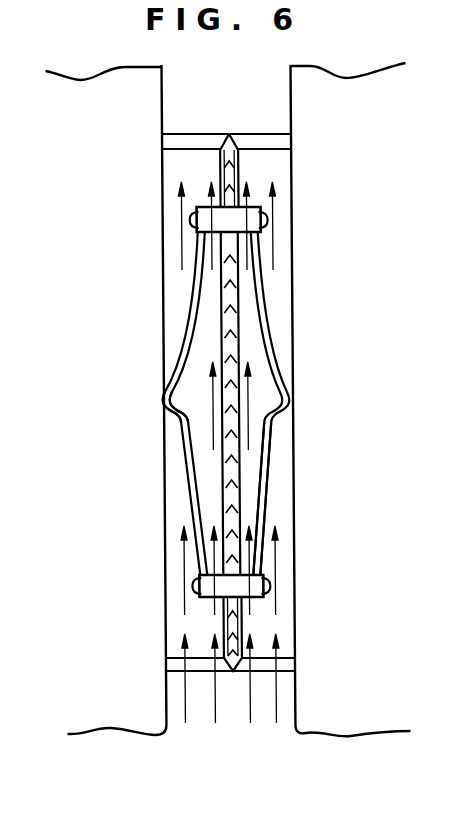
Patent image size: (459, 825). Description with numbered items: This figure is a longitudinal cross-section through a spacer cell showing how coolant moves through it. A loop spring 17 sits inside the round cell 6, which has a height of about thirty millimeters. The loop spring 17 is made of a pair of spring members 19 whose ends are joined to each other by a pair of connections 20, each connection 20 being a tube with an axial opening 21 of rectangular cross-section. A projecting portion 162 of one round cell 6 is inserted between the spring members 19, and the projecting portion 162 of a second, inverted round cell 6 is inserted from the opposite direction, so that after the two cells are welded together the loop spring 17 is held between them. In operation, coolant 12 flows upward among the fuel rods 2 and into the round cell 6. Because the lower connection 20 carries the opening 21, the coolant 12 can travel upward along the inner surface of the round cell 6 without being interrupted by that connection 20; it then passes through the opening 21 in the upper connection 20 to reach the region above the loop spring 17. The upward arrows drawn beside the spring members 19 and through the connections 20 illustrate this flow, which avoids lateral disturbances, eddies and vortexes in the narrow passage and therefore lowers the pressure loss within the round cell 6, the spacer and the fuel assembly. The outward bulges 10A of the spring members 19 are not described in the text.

The fuel rod 2 is at (72, 738).
The round cell 6 is at (209, 134).
The bag bulge portion 10A is at (176, 440).
The coolant 12 is at (186, 711).
The loop spring 17 is at (268, 500).
The spring member 19 is at (185, 333).
The connection 20 is at (264, 220).
The opening 21 is at (196, 232).
The projecting portion 162 is at (241, 480).